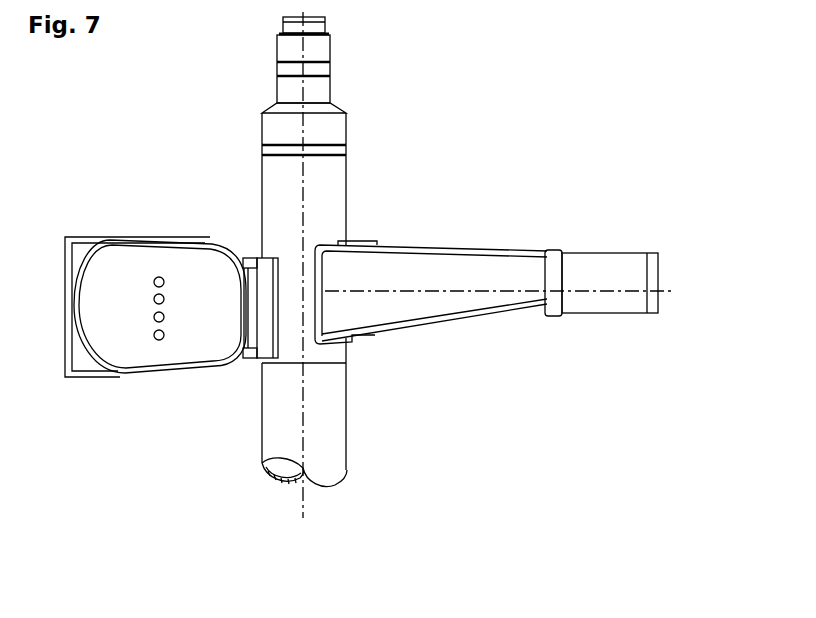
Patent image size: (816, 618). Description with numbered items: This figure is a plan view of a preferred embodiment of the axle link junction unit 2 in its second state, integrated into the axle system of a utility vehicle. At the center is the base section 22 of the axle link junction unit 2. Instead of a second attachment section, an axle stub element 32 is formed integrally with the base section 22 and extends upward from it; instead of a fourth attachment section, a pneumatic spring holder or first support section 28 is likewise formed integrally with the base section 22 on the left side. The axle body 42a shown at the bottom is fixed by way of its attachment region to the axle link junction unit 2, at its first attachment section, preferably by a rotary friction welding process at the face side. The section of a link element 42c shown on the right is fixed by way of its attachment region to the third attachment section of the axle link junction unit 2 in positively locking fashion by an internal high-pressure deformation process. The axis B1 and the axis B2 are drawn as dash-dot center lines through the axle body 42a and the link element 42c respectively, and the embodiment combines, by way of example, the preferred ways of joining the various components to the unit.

The axle link junction unit 2 is at (253, 190).
The axle stub element 32 is at (334, 128).
The base section 22 is at (293, 303).
The first support section 28 is at (128, 252).
The axle body 42a is at (333, 408).
The link element 42c is at (425, 305).
The first axis B1 is at (305, 505).
The second axis B2 is at (473, 293).